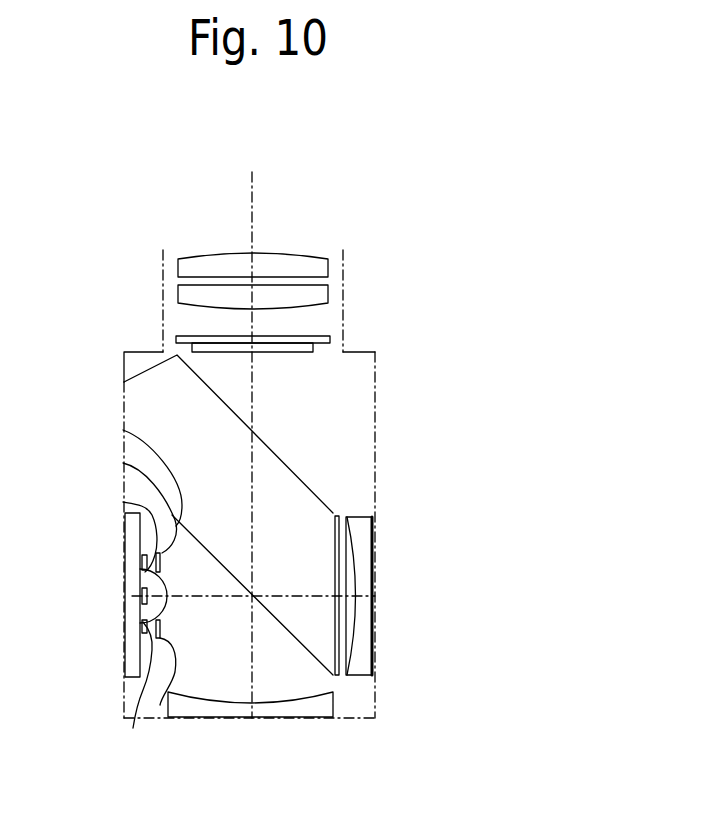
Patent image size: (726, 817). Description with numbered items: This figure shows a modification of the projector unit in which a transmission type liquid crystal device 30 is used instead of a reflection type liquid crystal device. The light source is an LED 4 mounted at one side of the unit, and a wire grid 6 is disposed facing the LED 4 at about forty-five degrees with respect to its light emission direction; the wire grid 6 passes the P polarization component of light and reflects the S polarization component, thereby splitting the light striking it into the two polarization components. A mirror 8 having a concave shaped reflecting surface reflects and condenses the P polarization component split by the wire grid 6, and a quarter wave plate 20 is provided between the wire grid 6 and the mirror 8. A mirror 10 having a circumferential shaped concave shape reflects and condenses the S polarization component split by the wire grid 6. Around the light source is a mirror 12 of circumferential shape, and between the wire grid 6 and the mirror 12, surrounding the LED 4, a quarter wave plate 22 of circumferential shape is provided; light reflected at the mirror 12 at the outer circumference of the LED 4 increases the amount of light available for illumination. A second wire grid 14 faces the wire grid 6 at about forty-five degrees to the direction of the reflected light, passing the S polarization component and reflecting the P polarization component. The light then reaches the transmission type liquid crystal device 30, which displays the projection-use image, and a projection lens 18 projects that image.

The LED 4 is at (140, 566).
The wire grid 6 is at (127, 428).
The mirror 8 is at (365, 578).
The mirror 10 is at (293, 710).
The mirror 12 is at (123, 502).
The wire grid 14 is at (124, 385).
The projection lens 18 is at (323, 250).
The quarter wave plate 20 is at (337, 677).
The quarter wave plate 22 is at (123, 463).
The transmission type liquid crystal device 30 is at (163, 340).